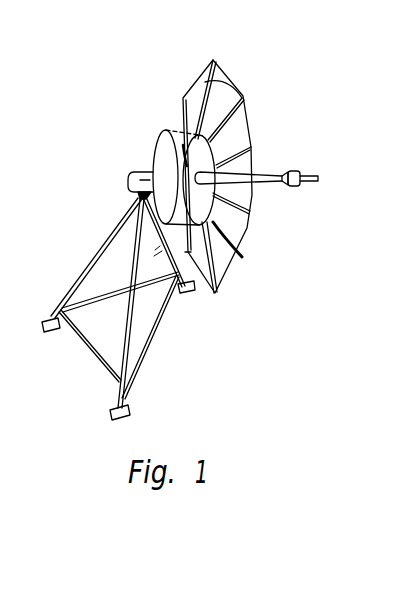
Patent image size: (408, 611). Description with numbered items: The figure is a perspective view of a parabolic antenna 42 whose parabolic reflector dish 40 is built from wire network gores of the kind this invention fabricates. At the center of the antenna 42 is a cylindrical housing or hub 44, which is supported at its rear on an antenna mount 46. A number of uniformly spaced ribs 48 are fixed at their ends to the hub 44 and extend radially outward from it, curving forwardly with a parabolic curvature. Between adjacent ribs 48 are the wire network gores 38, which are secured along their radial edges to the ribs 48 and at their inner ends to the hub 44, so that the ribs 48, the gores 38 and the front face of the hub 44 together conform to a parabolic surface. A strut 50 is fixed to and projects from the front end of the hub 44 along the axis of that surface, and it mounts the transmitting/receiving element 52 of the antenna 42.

The wire network gores 38 is at (221, 268).
The parabolic reflector dish 40 is at (258, 127).
The parabolic antenna 42 is at (146, 106).
The hub 44 is at (158, 148).
The antenna mount 46 is at (108, 236).
The ribs 48 is at (203, 84).
The strut 50 is at (274, 184).
The transmitting/receiving element 52 is at (307, 174).